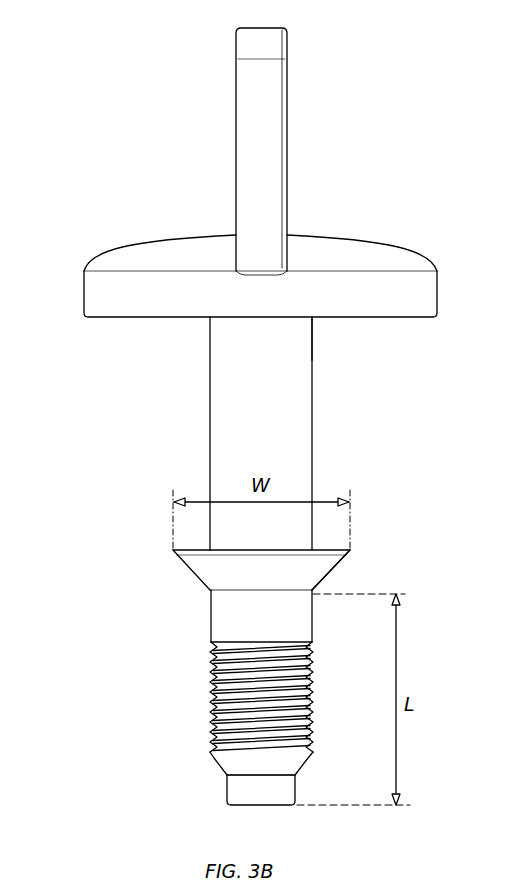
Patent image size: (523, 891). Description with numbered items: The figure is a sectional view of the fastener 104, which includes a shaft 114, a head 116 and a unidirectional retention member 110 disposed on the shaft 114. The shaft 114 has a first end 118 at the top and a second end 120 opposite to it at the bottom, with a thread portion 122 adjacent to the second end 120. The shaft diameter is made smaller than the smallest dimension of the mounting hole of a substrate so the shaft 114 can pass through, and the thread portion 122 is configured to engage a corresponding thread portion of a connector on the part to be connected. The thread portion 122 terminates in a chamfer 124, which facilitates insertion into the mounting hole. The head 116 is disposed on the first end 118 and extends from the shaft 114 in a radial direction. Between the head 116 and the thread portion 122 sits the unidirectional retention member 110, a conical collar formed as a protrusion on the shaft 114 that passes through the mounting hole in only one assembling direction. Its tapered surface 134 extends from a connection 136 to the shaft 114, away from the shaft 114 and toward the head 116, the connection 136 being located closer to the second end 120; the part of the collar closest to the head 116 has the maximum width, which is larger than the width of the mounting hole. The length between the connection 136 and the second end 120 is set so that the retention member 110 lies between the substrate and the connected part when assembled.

The fastener 104 is at (458, 124).
The head 116 is at (84, 295).
The first end 118 is at (312, 330).
The shaft 114 is at (314, 446).
The tapered surface 134 is at (191, 574).
The unidirectional retention member 110 is at (342, 572).
The connection 136 is at (210, 590).
The thread portion 122 is at (210, 695).
The chamfer 124 is at (227, 760).
The second end 120 is at (227, 790).